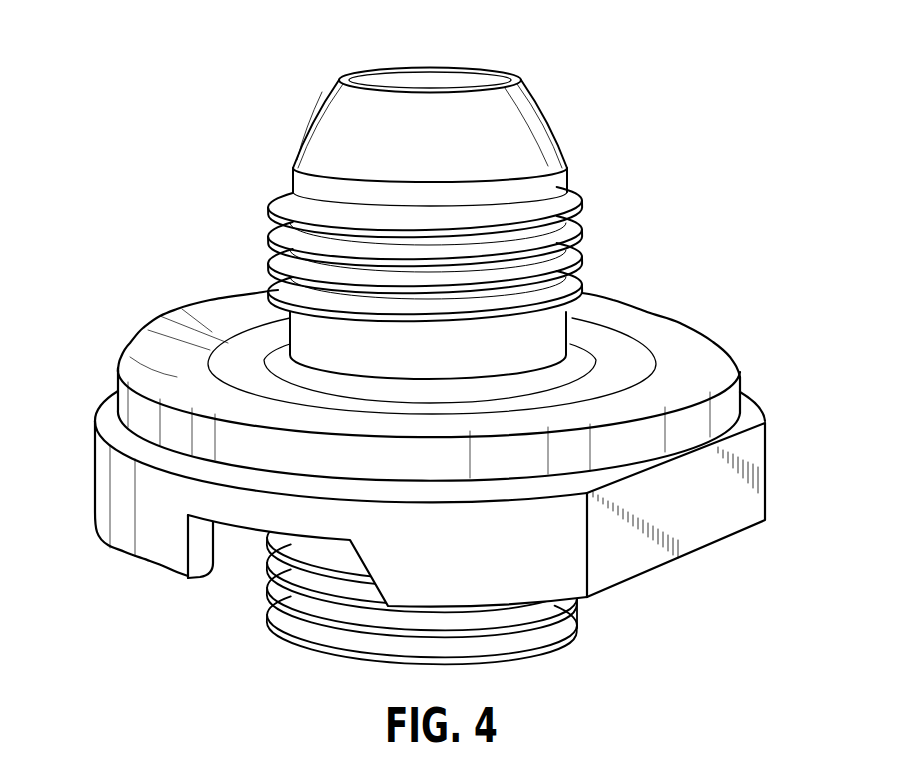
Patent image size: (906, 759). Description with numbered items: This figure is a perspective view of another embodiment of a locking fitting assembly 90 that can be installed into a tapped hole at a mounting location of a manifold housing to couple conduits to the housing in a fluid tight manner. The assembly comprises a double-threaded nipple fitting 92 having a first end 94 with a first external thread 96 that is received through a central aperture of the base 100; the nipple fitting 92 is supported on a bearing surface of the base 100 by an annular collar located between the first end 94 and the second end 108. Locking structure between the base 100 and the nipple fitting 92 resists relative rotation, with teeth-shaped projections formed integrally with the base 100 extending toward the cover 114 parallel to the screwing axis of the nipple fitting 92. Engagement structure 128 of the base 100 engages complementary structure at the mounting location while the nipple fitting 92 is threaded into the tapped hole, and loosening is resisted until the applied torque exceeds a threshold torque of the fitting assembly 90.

The locking fitting assembly 90 is at (247, 58).
The double-threaded nipple fitting 92 is at (458, 118).
The first end 94 is at (504, 72).
The first external thread 96 is at (587, 257).
The cover 114 is at (141, 326).
The base 100 is at (121, 553).
The engagement structure 128 is at (233, 579).
The second end 108 is at (541, 644).